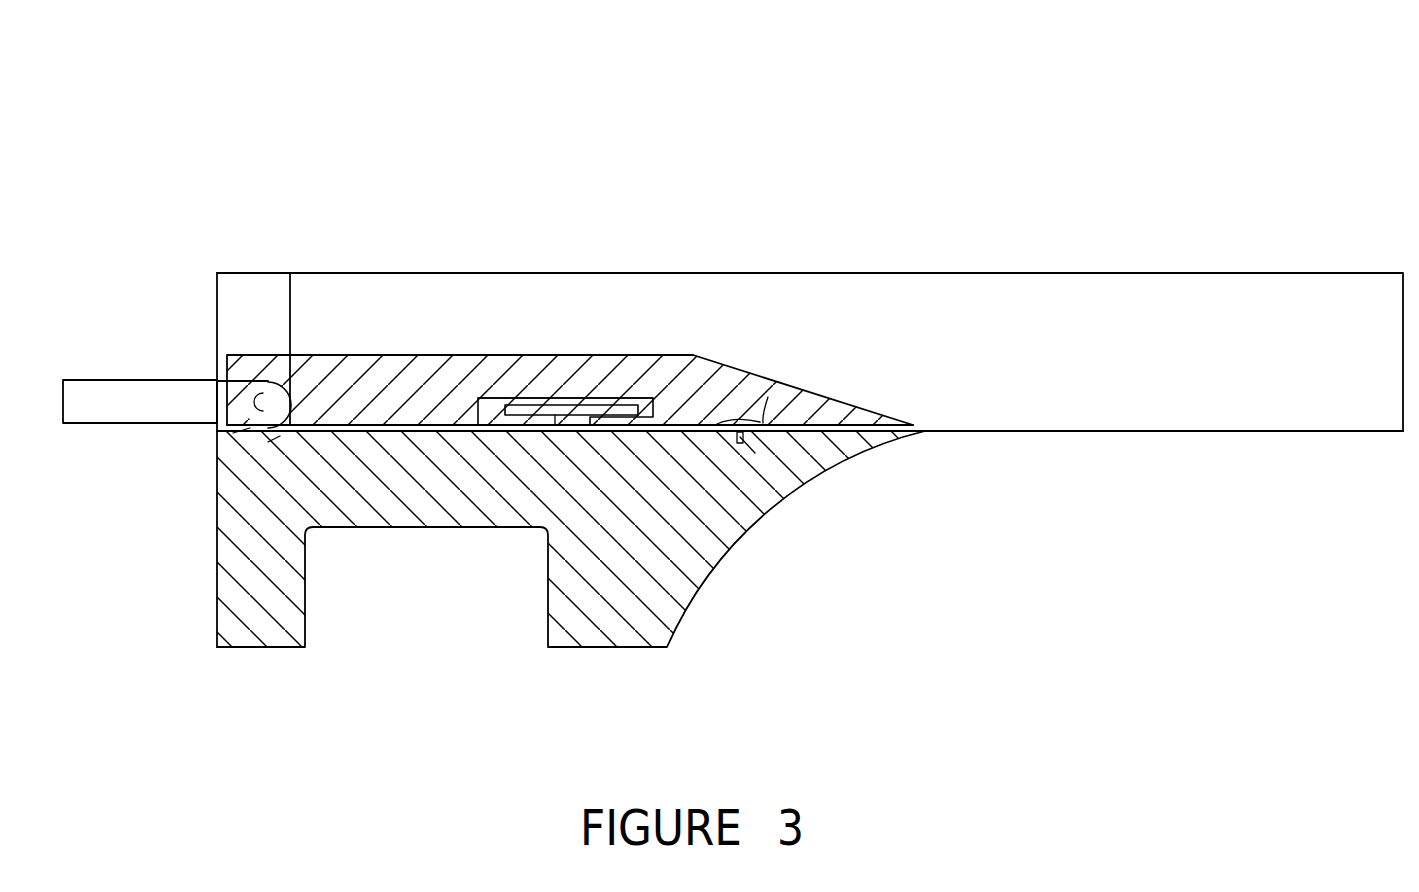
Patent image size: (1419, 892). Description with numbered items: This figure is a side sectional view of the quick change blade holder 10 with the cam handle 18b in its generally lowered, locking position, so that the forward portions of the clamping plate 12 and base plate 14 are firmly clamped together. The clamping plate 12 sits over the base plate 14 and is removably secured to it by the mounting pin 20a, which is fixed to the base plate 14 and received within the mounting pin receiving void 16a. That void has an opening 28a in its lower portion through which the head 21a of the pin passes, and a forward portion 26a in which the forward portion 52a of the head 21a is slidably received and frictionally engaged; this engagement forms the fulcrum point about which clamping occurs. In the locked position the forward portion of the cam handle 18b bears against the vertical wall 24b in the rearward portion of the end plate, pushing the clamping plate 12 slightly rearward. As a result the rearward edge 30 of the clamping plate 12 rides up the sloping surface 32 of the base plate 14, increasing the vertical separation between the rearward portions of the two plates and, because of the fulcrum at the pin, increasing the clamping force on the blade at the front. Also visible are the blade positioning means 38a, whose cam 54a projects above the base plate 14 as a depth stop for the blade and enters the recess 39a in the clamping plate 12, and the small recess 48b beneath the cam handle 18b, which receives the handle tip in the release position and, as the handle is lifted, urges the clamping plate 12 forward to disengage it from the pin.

The holder 10 is at (890, 145).
The clamping plate 12 is at (363, 350).
The base plate 14 is at (340, 532).
The mounting pin receiving void 16a is at (478, 410).
The cam handle 18b is at (113, 378).
The mounting pin 20a is at (572, 397).
The head 21a is at (530, 410).
The vertical wall 24b is at (290, 315).
The forward portion of receiving void 26a is at (707, 360).
The opening 28a is at (493, 412).
The rearward edge 30 is at (243, 424).
The sloping surface 32 is at (233, 433).
The blade positioning means 38a is at (757, 437).
The recess 39a is at (840, 397).
The recess 48b is at (268, 442).
The forward portion of head 52a is at (745, 445).
The cam 54a is at (777, 413).